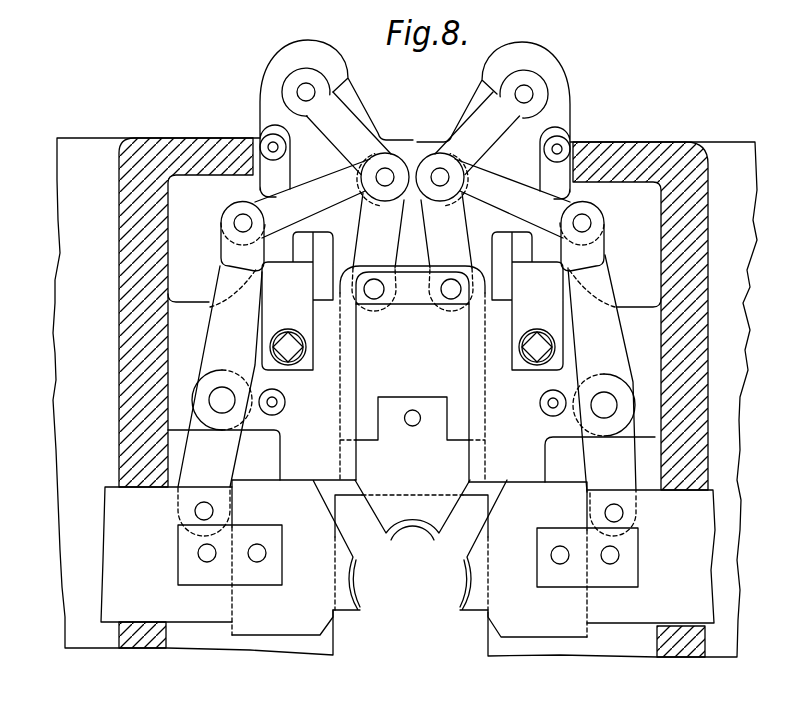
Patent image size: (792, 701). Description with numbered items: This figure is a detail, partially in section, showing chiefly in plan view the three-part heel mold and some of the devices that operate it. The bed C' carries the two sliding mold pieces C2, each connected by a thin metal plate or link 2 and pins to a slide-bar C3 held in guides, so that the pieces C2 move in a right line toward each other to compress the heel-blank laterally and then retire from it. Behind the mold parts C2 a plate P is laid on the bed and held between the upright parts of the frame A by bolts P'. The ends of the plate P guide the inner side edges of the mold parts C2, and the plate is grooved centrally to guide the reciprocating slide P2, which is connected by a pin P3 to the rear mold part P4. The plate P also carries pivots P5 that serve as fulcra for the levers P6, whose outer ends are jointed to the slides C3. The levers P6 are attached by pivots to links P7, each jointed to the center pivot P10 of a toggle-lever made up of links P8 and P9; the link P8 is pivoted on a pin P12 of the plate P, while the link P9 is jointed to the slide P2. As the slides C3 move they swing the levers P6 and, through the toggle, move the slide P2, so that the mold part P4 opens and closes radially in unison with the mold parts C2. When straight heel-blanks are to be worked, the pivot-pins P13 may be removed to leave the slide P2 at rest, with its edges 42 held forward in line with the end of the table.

The frame A is at (116, 308).
The bed C' is at (394, 384).
The sliding pieces of the mold C2 is at (409, 558).
The slide-bar C3 is at (408, 555).
The link 2 is at (408, 556).
The plate P is at (411, 261).
The bolts P' is at (412, 301).
The reciprocating slide P2 is at (412, 393).
The pin P3 is at (405, 417).
The mold part P4 is at (411, 534).
The pivots P5 is at (216, 396).
The levers P6 is at (407, 379).
The link P7 is at (412, 215).
The toggle-lever link P8 is at (413, 133).
The toggle-lever link P9 is at (412, 252).
The center pivot P10 is at (439, 168).
The pin P12 is at (307, 83).
The pivot-pins P13 is at (384, 290).
The edges 42 is at (412, 387).